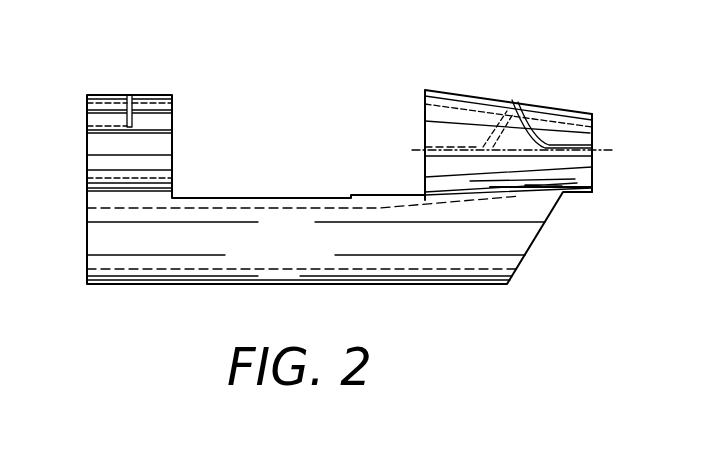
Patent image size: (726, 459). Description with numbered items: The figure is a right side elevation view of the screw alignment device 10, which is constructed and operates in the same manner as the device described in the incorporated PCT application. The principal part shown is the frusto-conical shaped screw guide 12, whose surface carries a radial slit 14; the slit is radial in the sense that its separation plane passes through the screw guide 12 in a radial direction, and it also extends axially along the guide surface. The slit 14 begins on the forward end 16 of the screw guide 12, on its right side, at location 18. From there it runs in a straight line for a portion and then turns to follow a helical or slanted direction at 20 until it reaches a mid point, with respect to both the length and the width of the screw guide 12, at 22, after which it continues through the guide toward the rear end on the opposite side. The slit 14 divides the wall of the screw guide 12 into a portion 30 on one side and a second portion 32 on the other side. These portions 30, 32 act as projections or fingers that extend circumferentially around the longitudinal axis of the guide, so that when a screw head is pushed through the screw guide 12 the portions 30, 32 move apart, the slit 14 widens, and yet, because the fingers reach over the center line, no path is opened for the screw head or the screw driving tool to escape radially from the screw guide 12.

The screw alignment device 10 is at (301, 117).
The screw guide 12 is at (472, 102).
The radial slit 14 is at (535, 125).
The forward end 16 is at (593, 163).
The location 18 is at (573, 168).
The helical or slanted direction 20 is at (515, 100).
The mid point 22 is at (512, 100).
The portion 30 is at (577, 137).
The second portion 32 is at (449, 108).